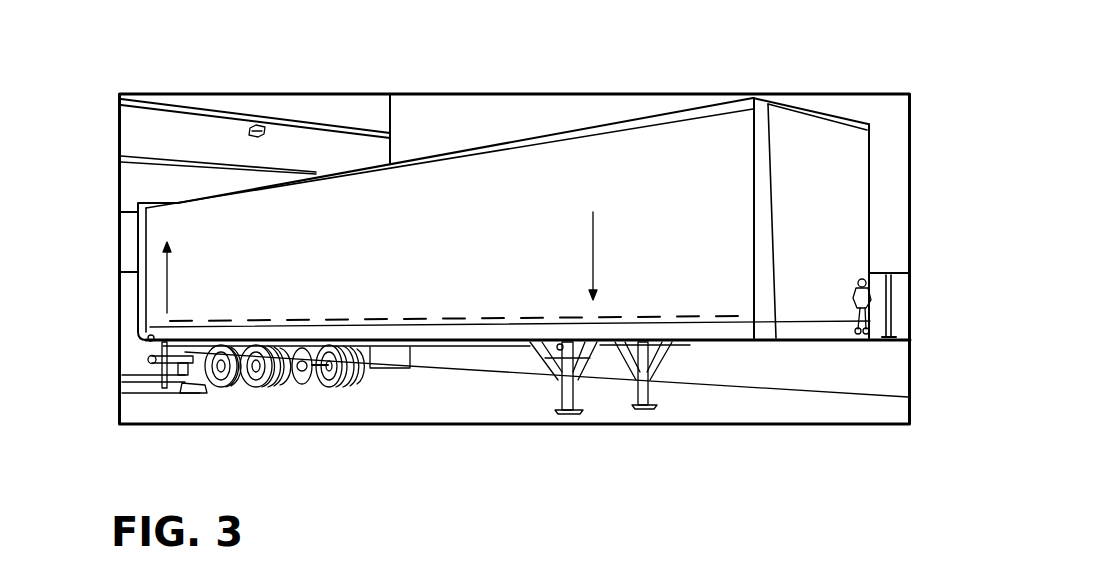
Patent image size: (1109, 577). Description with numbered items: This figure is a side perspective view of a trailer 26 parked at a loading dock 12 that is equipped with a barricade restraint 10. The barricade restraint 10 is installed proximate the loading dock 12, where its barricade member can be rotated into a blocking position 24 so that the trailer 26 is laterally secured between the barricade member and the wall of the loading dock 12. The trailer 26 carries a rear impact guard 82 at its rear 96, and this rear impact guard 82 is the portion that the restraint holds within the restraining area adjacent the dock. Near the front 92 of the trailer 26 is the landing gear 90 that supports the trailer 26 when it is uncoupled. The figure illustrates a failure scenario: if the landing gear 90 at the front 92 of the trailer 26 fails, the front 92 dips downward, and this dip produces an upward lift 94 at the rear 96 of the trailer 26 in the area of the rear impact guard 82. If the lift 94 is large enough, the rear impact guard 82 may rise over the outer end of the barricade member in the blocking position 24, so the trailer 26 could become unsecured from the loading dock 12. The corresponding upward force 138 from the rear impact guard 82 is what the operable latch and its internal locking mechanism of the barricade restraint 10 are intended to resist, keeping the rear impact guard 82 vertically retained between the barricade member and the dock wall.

The barricade restraint 10 is at (211, 404).
The loading dock 12 is at (190, 190).
The blocking position 24 is at (146, 333).
The trailer 26 is at (508, 138).
The rear impact guard 82 is at (165, 357).
The landing gear 90 is at (574, 396).
The front 92 is at (819, 212).
The upward lift 94 is at (139, 266).
The rear 96 is at (162, 223).
The upward force 138 is at (156, 286).